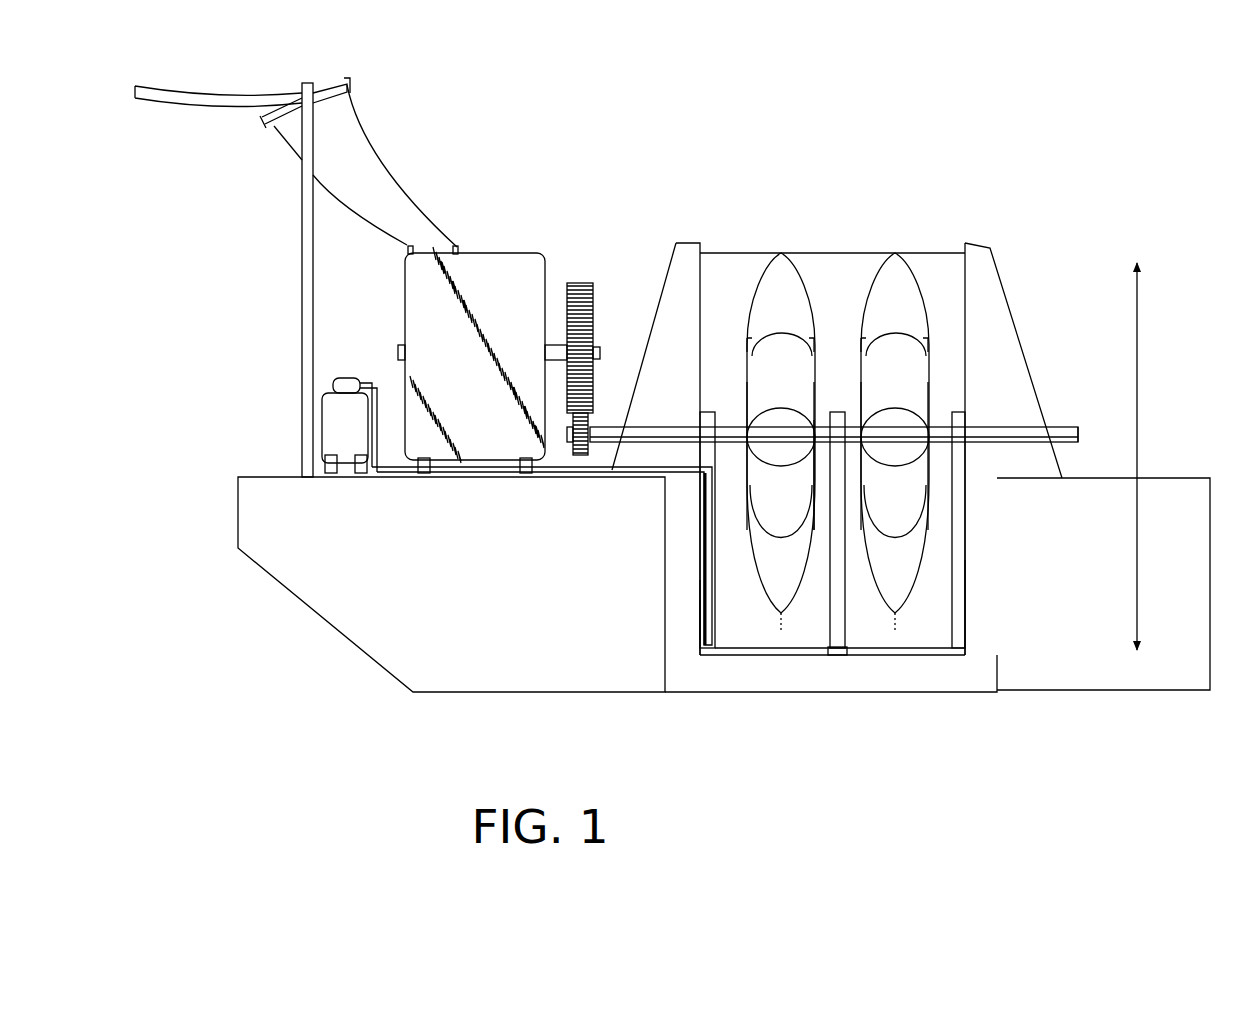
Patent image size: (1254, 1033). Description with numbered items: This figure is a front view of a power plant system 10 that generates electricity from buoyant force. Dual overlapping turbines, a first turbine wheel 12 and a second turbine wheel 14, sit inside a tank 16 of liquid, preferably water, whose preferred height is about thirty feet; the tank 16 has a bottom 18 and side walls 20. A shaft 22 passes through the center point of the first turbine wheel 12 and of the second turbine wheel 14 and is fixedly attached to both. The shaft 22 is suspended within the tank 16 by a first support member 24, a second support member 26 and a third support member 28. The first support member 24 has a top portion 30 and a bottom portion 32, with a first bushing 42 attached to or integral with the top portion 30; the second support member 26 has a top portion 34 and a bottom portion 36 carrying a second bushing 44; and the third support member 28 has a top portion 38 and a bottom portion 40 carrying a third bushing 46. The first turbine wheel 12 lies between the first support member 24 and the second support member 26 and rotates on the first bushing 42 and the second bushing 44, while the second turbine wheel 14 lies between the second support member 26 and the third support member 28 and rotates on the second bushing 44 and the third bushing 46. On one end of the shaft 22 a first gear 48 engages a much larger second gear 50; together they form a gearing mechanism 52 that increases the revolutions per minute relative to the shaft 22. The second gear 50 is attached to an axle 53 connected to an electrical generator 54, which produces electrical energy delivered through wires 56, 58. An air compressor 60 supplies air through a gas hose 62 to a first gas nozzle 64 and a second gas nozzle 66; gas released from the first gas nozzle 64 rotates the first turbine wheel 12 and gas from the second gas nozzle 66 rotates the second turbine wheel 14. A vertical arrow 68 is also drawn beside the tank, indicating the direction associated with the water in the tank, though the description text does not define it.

The power plant system 10 is at (970, 146).
The first turbine wheel 12 is at (789, 243).
The second turbine wheel 14 is at (907, 246).
The tank 16 is at (993, 238).
The bottom 18 is at (878, 674).
The side walls 20 is at (690, 240).
The shaft 22 is at (1077, 412).
The first support member 24 is at (696, 582).
The second support member 26 is at (836, 656).
The third support member 28 is at (963, 658).
The top portion 30 is at (699, 469).
The bottom portion 32 is at (700, 637).
The top portion 34 is at (827, 529).
The bottom portion 36 is at (827, 609).
The top portion 38 is at (978, 472).
The bottom portion 40 is at (978, 632).
The first bushing 42 is at (694, 417).
The second bushing 44 is at (825, 415).
The third bushing 46 is at (978, 419).
The first gear 48 is at (594, 423).
The second gear 50 is at (598, 280).
The gearing mechanism 52 is at (581, 271).
The axle 53 is at (558, 343).
The electrical generator 54 is at (482, 246).
The wire 56 is at (341, 191).
The wire 58 is at (372, 135).
The air compressor 60 is at (350, 378).
The gas hose 62 is at (381, 481).
The first gas nozzle 64 is at (769, 622).
The second gas nozzle 66 is at (901, 613).
The water flow direction arrow 68 is at (1138, 425).